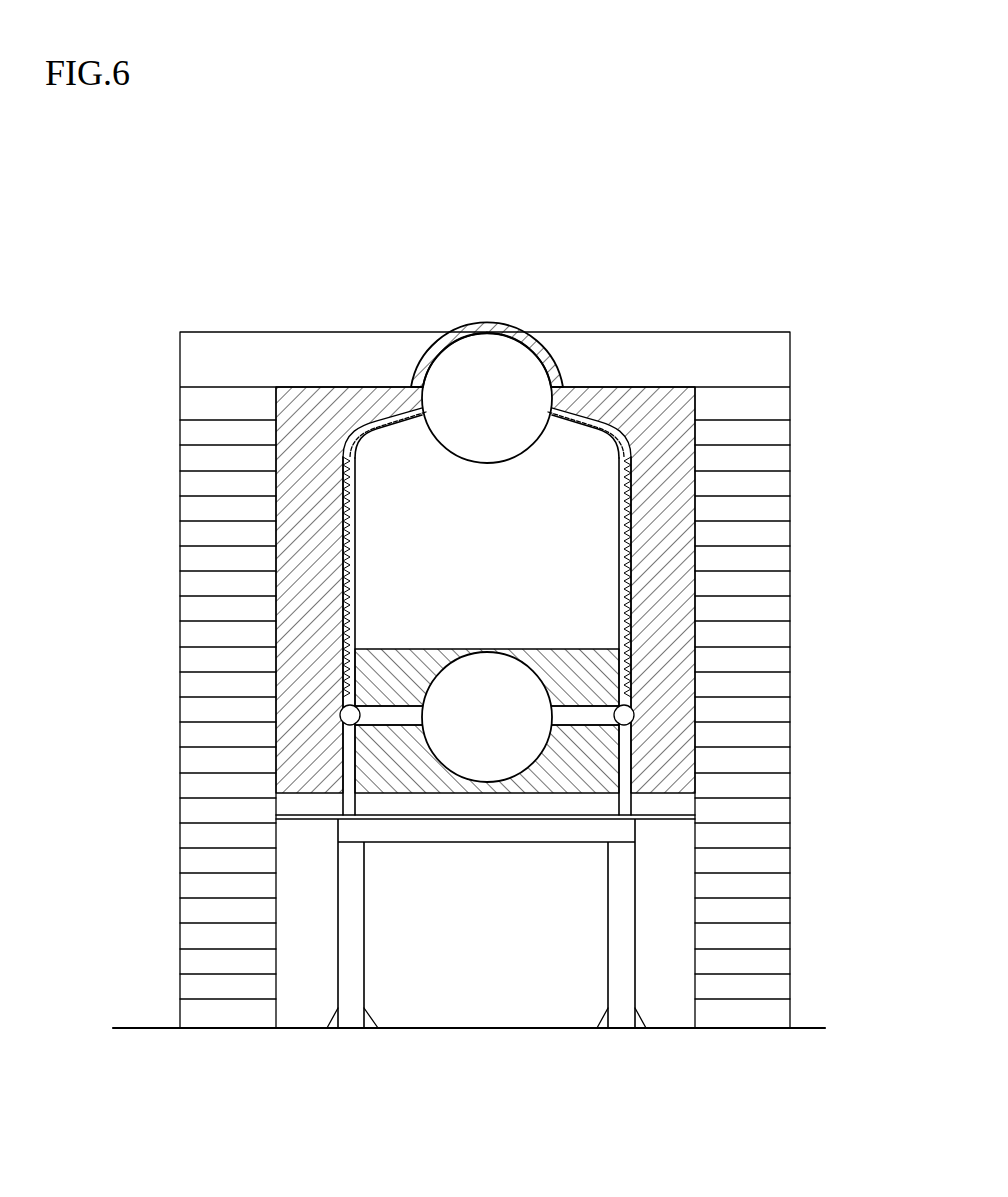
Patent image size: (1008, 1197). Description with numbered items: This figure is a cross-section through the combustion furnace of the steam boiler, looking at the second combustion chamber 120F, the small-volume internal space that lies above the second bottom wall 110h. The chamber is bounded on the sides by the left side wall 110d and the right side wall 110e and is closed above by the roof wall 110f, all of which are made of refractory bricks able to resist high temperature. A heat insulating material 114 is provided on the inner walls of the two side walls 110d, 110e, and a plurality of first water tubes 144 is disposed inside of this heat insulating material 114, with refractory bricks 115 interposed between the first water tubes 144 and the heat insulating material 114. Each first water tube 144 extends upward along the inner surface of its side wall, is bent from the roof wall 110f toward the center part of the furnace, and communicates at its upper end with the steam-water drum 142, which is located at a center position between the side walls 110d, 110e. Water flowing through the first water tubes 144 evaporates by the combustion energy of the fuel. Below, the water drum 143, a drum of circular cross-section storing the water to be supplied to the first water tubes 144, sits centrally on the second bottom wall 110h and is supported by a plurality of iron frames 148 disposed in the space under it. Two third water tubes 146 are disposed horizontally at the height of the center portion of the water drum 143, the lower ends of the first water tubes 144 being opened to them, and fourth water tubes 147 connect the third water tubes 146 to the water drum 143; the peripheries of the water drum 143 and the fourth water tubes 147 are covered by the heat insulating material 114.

The left side wall 110d is at (203, 858).
The right side wall 110e is at (770, 862).
The roof wall 110f is at (600, 427).
The second bottom wall 110h is at (610, 777).
The heat insulating material 114 is at (668, 410).
The refractory bricks 115 is at (343, 545).
The second combustion chamber 120F is at (520, 605).
The steam-water drum 142 is at (477, 353).
The water drum 143 is at (481, 765).
The first water tubes 144 is at (356, 544).
The third water tubes 146 is at (352, 713).
The fourth water tubes 147 is at (392, 712).
The iron frames 148 is at (353, 805).